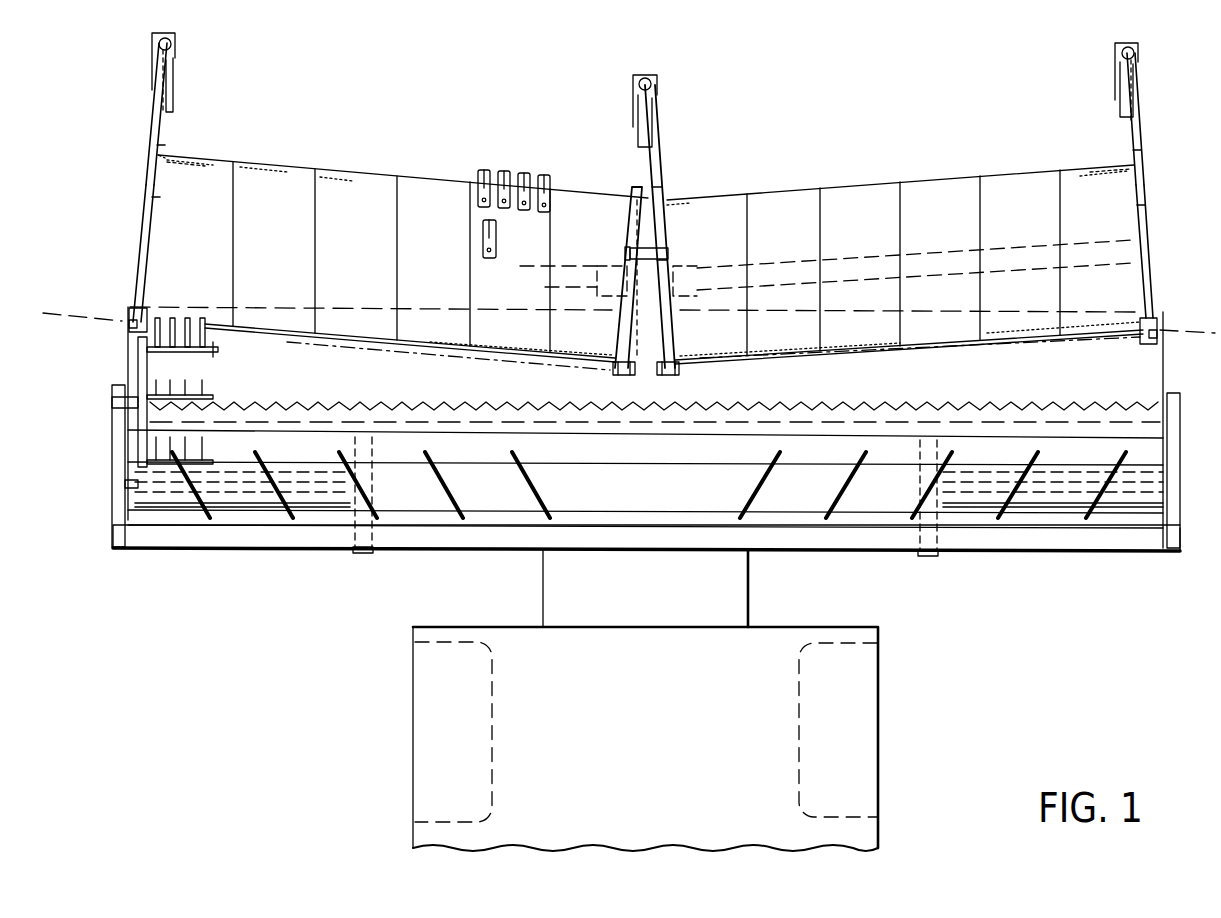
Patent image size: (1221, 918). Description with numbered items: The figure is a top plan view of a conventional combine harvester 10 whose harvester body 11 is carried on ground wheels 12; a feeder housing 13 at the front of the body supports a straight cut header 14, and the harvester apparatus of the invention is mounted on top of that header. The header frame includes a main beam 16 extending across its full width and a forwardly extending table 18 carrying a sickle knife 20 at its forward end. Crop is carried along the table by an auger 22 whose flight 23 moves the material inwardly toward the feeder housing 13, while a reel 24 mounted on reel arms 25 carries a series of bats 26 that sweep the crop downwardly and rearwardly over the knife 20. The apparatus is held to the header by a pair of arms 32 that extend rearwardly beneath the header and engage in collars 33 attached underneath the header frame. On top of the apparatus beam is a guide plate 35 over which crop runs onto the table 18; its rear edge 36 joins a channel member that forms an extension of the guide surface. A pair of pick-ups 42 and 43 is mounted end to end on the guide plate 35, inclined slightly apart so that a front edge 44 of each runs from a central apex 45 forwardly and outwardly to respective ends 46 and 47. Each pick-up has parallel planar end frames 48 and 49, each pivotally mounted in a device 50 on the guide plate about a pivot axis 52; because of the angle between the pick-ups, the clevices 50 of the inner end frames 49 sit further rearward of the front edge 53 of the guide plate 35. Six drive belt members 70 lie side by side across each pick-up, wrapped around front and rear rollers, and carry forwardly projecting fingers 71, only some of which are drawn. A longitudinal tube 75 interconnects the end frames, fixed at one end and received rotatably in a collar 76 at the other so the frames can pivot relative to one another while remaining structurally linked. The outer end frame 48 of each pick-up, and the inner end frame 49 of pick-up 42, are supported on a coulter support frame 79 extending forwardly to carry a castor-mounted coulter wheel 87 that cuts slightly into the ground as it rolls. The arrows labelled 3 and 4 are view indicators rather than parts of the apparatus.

The combine harvester 10 is at (805, 625).
The harvester body 11 is at (878, 630).
The ground wheels 12 is at (425, 708).
The feeder housing 13 is at (553, 578).
The straight cut header 14 is at (406, 553).
The main beam 16 is at (1047, 547).
The table 18 is at (677, 450).
The sickle knife 20 is at (871, 403).
The auger 22 is at (240, 503).
The flight 23 is at (280, 503).
The reel 24 is at (128, 360).
The reel arms 25 is at (115, 437).
The bats 26 is at (193, 353).
The arms 32 is at (372, 470).
The collar 33 is at (347, 533).
The guide plate 35 is at (1034, 398).
The rear edge 36 is at (602, 438).
The pick-up 42 is at (857, 128).
The pick-up 43 is at (377, 122).
The front edge 44 is at (362, 175).
The central apex 45 is at (670, 186).
The end 46 is at (1125, 162).
The end 47 is at (167, 155).
The end frame 48 is at (145, 232).
The end frame 49 is at (628, 208).
The device 50 is at (128, 308).
The pivot axis 52 is at (290, 345).
The front edge 53 is at (400, 303).
The drive belt members 70 is at (295, 148).
The fingers 71 is at (503, 158).
The tube 75 is at (567, 267).
The collar 76 is at (676, 272).
The coulter support frame 79 is at (155, 128).
The coulter wheel 87 is at (178, 86).
The section line 3- 3 is at (522, 306).
The section line 4- 4 is at (389, 140).